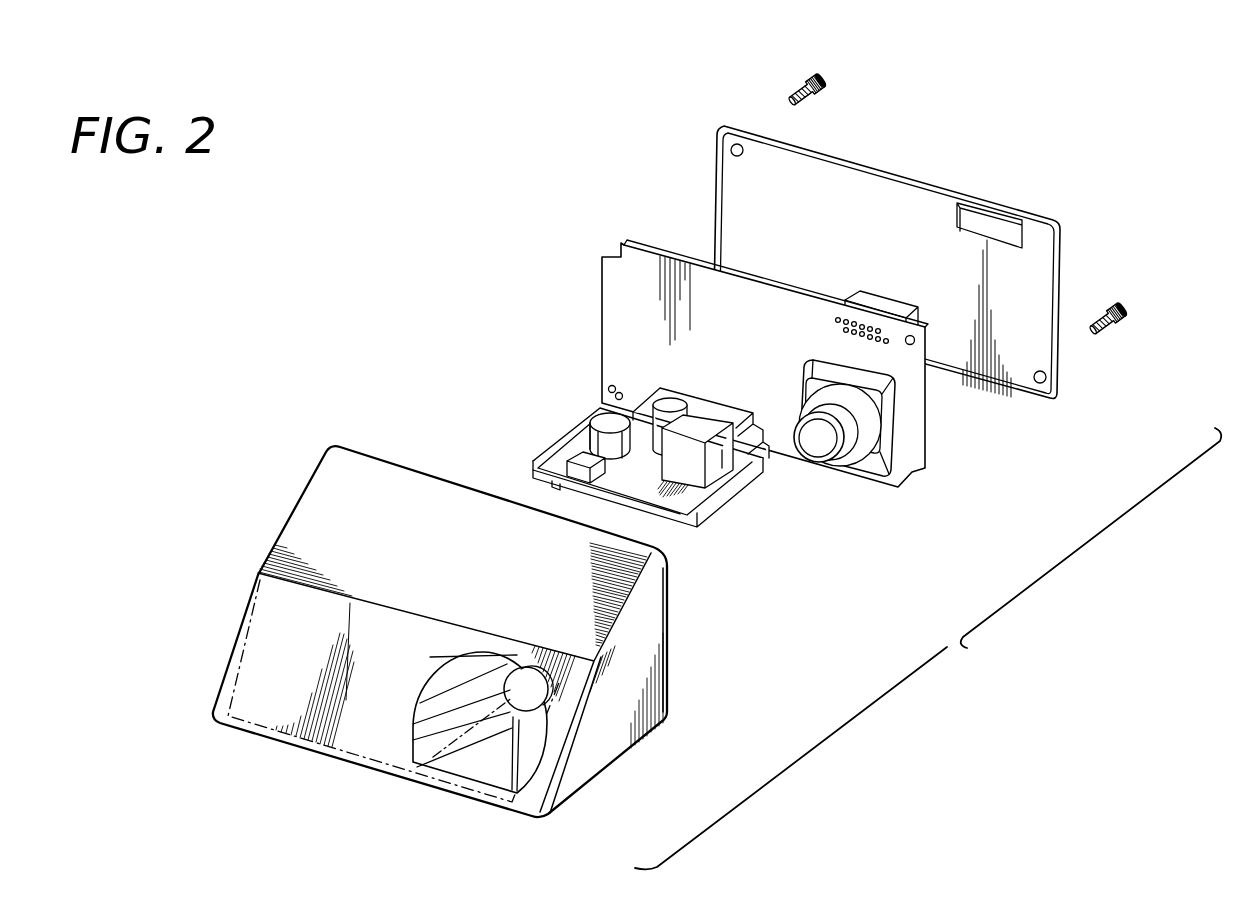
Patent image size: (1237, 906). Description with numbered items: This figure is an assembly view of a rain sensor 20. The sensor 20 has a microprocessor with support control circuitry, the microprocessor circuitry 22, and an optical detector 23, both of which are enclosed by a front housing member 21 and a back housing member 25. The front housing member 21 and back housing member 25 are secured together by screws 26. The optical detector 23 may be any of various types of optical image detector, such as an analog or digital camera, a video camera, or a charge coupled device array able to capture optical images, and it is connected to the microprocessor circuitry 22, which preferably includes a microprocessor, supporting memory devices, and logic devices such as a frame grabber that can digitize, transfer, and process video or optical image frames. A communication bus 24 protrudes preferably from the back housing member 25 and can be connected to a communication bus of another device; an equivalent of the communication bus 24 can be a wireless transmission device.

The sensor 20 is at (552, 242).
The front housing member 21 is at (622, 725).
The microprocessor circuitry 22 is at (565, 437).
The optical detector 23 is at (838, 463).
The communication bus 24 is at (880, 298).
The back housing member 25 is at (1040, 208).
The screws 26 is at (830, 78).